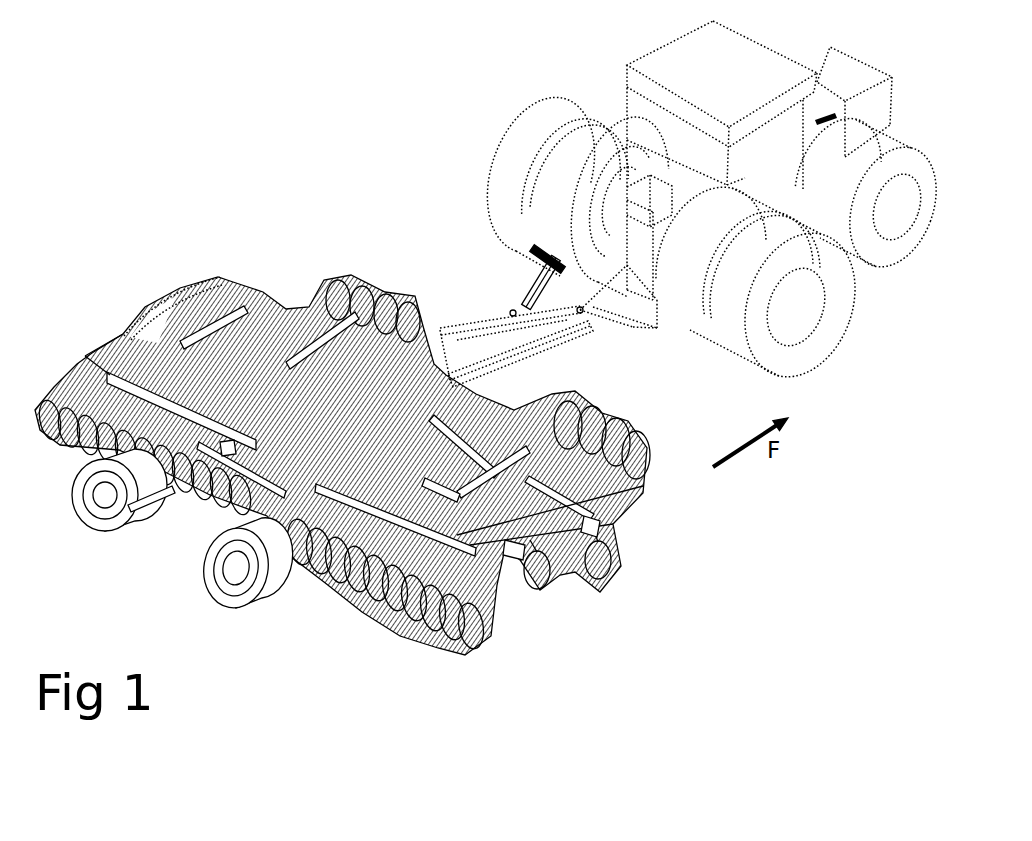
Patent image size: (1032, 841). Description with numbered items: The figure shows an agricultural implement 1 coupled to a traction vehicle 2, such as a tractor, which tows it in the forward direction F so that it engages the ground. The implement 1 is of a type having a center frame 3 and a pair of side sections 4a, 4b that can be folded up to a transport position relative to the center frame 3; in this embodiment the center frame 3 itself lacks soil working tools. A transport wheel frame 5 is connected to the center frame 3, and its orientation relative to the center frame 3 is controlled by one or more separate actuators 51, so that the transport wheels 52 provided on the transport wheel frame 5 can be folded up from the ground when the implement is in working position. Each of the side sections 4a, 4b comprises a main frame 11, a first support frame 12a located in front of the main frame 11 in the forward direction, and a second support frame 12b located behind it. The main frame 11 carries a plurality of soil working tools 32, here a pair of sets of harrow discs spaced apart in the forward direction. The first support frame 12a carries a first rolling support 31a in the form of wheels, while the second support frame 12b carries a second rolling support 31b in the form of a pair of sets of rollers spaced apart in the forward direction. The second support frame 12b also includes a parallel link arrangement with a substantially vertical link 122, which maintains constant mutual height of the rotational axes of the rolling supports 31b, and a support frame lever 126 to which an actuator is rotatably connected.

The agricultural implement 1 is at (150, 262).
The traction vehicle 2 is at (480, 106).
The center frame 3 is at (337, 377).
The side section 4a is at (655, 540).
The side section 4b is at (101, 304).
The transport wheel frame 5 is at (163, 490).
The actuator 51 is at (227, 447).
The transport wheel 52 is at (226, 578).
The main frame 11 is at (590, 523).
The first support frame 12a is at (647, 454).
The second support frame 12b is at (427, 614).
The first rolling support 31a is at (640, 460).
The second rolling support 31b is at (450, 640).
The soil working tools 32 is at (547, 577).
The first substantially vertical link 122 is at (520, 547).
The support frame lever 126 is at (437, 490).